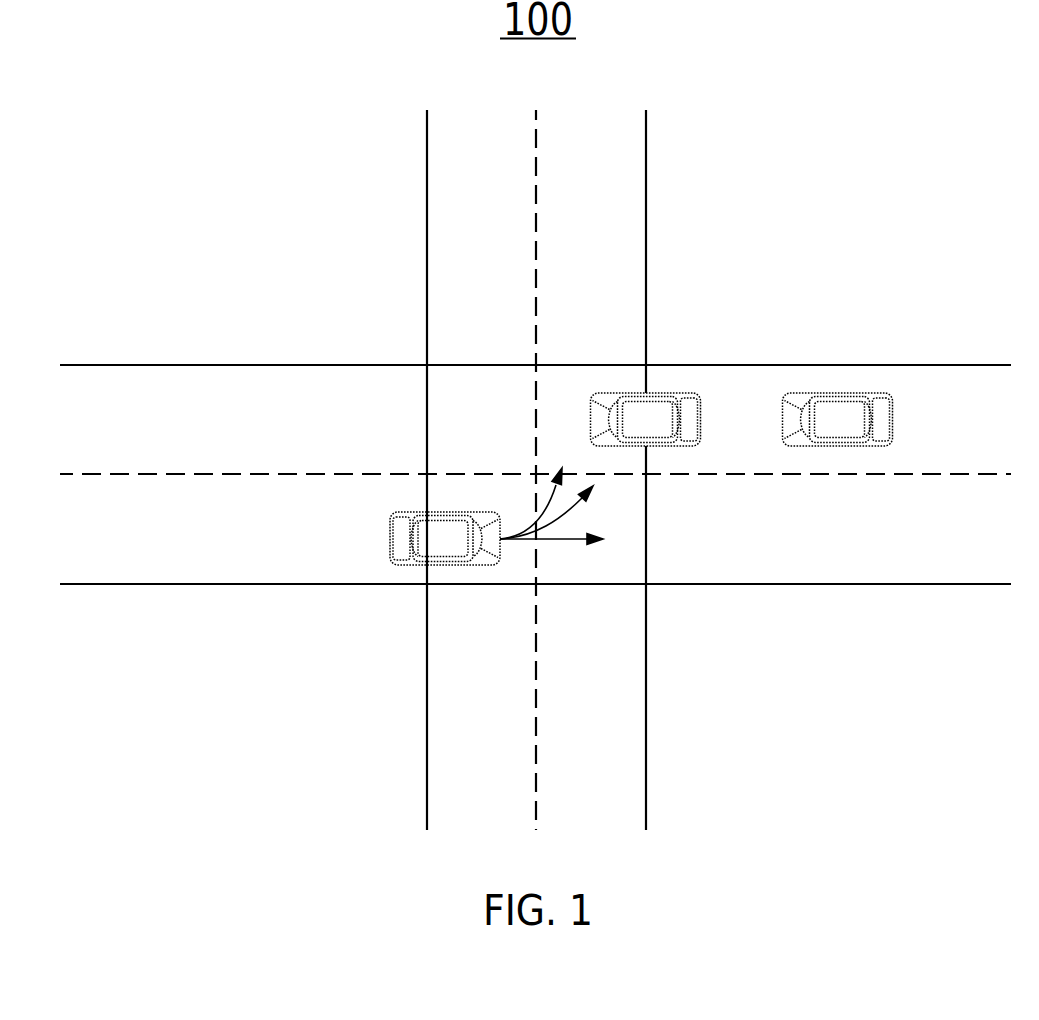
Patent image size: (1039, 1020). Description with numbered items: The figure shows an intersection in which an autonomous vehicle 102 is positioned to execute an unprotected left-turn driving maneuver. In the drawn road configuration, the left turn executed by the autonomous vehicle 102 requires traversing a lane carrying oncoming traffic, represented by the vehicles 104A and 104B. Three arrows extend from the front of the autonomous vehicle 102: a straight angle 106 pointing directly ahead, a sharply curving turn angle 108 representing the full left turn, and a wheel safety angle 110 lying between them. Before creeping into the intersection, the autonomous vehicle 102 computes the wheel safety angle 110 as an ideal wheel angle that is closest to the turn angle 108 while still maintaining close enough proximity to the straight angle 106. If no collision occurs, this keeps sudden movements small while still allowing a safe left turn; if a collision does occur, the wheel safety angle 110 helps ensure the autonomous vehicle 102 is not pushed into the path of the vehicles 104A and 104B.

The autonomous vehicle 102 is at (388, 538).
The vehicle 104A is at (669, 393).
The vehicle 104B is at (893, 423).
The straight angle 106 is at (548, 541).
The turn angle 108 is at (550, 497).
The wheel safety angle 110 is at (581, 507).